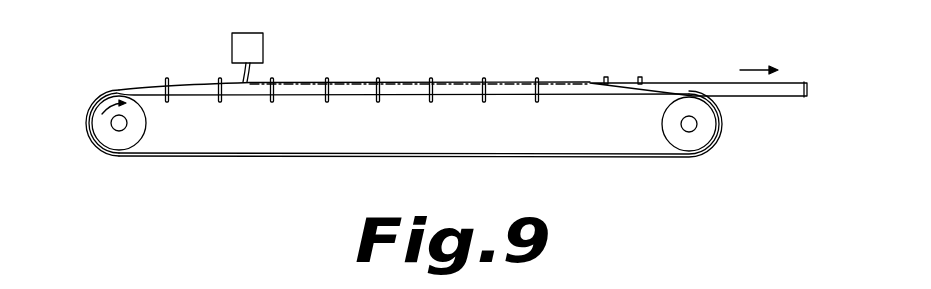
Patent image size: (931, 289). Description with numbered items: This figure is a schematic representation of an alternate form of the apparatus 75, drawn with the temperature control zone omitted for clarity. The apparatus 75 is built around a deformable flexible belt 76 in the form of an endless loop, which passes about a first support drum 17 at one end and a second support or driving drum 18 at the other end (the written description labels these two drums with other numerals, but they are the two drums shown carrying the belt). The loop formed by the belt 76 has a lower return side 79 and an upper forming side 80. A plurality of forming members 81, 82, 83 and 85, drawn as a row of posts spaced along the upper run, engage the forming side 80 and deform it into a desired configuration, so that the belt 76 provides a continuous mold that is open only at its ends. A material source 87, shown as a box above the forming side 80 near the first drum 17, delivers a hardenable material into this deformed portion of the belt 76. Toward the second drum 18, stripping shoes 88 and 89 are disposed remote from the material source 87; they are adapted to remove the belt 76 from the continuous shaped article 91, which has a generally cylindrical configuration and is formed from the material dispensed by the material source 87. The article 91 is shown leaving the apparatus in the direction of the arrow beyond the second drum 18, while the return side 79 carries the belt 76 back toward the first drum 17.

The apparatus 75 is at (73, 110).
The drive pulley 17 is at (112, 142).
The idler pulley 18 is at (703, 136).
The deformable flexible belt 76 is at (165, 158).
The return side 79 is at (550, 157).
The forming side 80 is at (453, 82).
The forming member 81 is at (167, 102).
The forming member 82 is at (220, 102).
The forming member 83 is at (272, 102).
The forming member 85 is at (431, 102).
The material source 87 is at (232, 43).
The stripping shoe 88 is at (603, 82).
The stripping shoe 89 is at (637, 81).
The continuous shaped article 91 is at (700, 86).